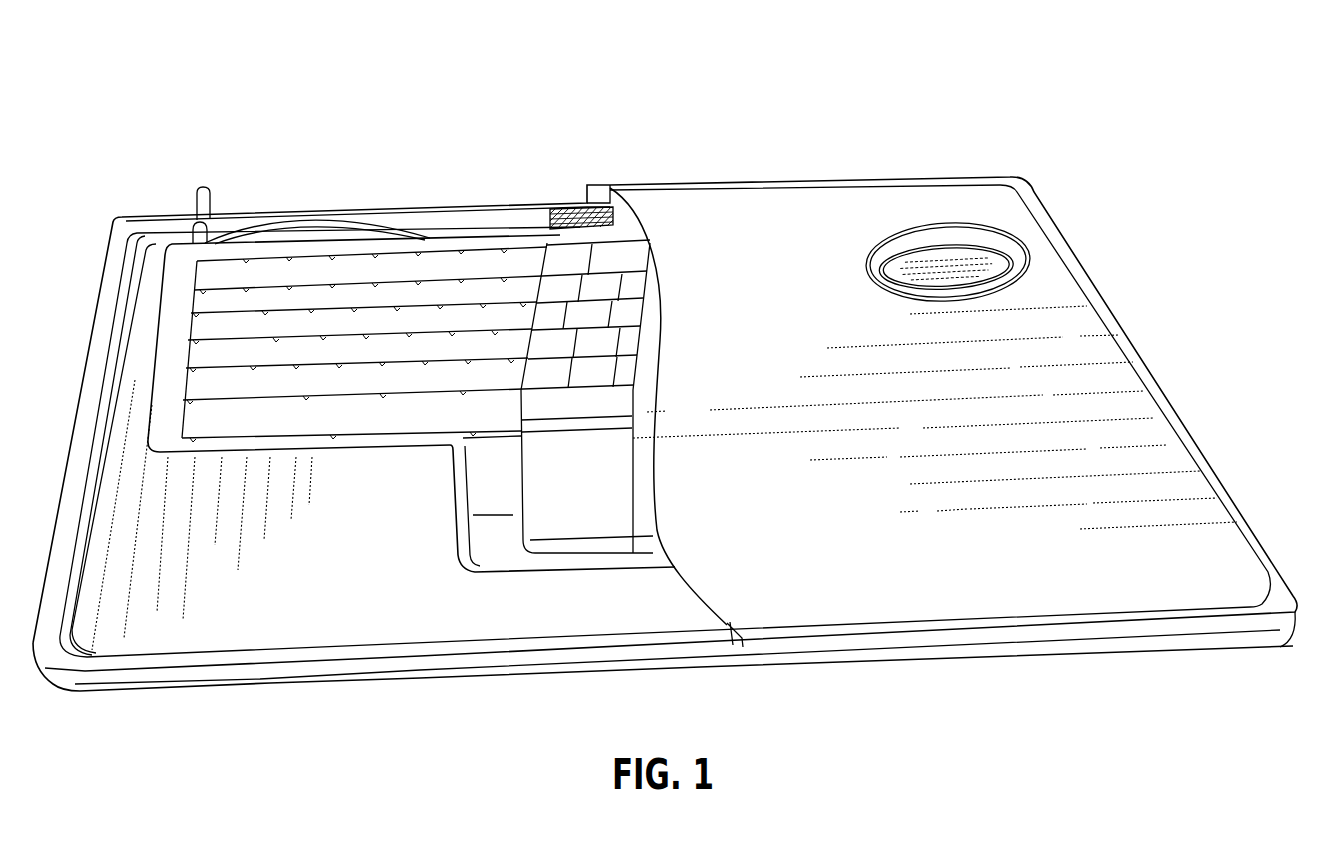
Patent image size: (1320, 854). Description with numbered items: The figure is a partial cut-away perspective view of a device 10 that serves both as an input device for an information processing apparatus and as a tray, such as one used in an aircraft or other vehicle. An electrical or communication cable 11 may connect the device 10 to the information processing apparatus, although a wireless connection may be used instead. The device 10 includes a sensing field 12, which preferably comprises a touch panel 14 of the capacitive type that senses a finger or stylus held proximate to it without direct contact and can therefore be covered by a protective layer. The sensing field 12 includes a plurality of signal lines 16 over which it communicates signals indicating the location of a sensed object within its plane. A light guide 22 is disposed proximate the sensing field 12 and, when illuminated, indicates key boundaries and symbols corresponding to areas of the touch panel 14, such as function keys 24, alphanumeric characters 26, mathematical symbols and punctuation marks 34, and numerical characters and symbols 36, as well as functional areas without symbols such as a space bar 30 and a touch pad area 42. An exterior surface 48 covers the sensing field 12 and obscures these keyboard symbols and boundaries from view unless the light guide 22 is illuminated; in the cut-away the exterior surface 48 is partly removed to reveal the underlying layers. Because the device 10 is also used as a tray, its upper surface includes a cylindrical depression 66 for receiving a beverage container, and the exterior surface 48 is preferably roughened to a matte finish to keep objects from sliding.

The device 10 is at (1188, 170).
The electrical or communication cable 11 is at (203, 187).
The sensing field 12 is at (411, 403).
The touch panel 14 is at (453, 503).
The signal lines 16 is at (387, 245).
The light guide 22 is at (605, 186).
The function keys 24 is at (598, 238).
The alphanumeric characters 26 is at (585, 395).
The space bar 30 is at (528, 422).
The mathematical symbols and punctuation marks 34 is at (636, 366).
The numerical characters and symbols 36 is at (640, 290).
The touch pad area 42 is at (612, 523).
The exterior surface 48 is at (1158, 377).
The cylindrical depression 66 is at (918, 240).